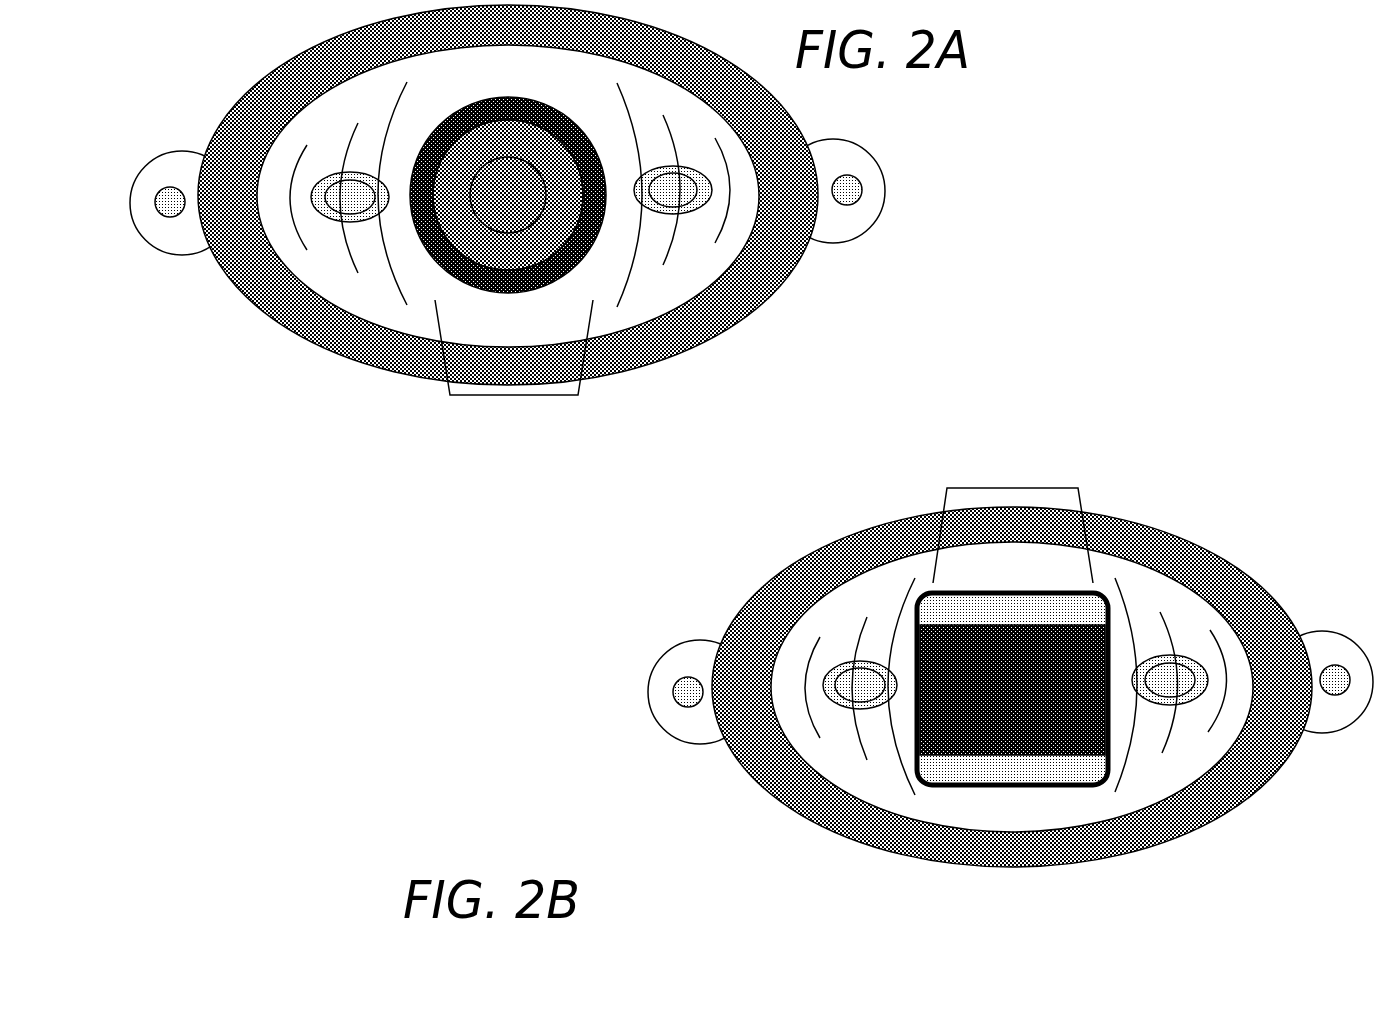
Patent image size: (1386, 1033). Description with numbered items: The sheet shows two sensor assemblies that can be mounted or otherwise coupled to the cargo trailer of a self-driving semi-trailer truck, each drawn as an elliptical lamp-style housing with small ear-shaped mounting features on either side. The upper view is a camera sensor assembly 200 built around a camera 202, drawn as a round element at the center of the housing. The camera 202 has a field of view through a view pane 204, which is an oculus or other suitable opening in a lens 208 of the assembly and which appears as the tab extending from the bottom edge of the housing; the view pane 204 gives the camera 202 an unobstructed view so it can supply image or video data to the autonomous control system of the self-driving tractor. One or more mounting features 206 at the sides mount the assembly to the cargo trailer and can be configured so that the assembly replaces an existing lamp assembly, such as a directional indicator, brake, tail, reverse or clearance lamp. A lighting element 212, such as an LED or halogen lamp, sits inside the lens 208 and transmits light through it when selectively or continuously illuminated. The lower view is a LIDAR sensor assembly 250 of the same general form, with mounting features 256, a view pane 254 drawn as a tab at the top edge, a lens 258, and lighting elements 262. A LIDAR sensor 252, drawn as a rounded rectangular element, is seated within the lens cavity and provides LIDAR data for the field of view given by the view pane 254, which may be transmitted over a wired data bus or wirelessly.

In FIG. 2A, the camera sensor assembly 200 is at (555, 264).
In FIG. 2A, the camera 202 is at (508, 157).
In FIG. 2A, the view pane 204 is at (517, 395).
In FIG. 2A, the mounting feature 206 is at (888, 185).
In FIG. 2A, the lens 208 is at (312, 135).
In FIG. 2A, the lighting element 212 is at (687, 203).
In FIG. 2B, the LIDAR sensor assembly 250 is at (964, 643).
In FIG. 2B, the LIDAR sensor 252 is at (1020, 733).
In FIG. 2B, the view pane 254 is at (1020, 488).
In FIG. 2B, the mounting feature 256 is at (648, 697).
In FIG. 2B, the lens 258 is at (872, 592).
In FIG. 2B, the lighting element 262 is at (1182, 693).